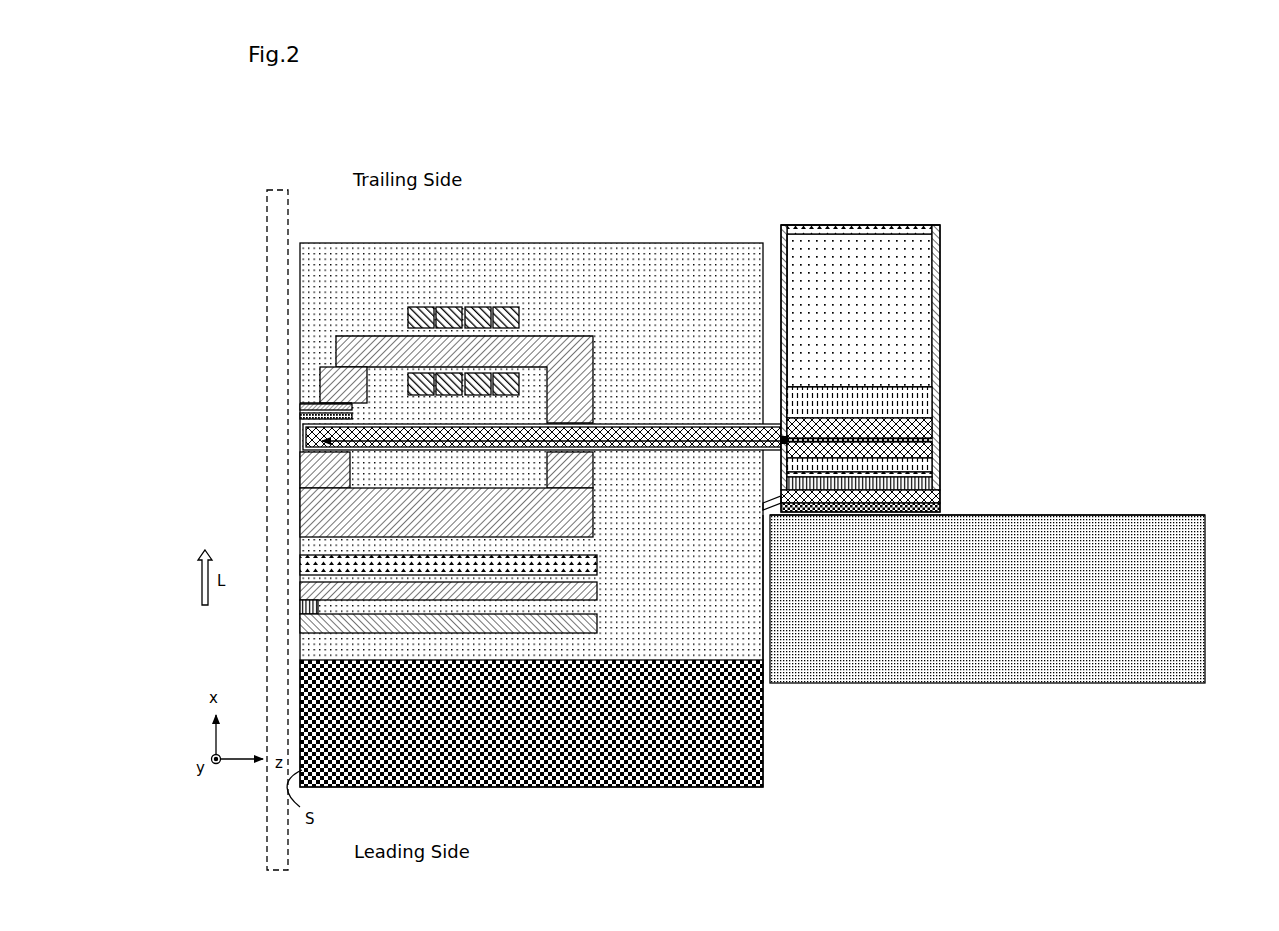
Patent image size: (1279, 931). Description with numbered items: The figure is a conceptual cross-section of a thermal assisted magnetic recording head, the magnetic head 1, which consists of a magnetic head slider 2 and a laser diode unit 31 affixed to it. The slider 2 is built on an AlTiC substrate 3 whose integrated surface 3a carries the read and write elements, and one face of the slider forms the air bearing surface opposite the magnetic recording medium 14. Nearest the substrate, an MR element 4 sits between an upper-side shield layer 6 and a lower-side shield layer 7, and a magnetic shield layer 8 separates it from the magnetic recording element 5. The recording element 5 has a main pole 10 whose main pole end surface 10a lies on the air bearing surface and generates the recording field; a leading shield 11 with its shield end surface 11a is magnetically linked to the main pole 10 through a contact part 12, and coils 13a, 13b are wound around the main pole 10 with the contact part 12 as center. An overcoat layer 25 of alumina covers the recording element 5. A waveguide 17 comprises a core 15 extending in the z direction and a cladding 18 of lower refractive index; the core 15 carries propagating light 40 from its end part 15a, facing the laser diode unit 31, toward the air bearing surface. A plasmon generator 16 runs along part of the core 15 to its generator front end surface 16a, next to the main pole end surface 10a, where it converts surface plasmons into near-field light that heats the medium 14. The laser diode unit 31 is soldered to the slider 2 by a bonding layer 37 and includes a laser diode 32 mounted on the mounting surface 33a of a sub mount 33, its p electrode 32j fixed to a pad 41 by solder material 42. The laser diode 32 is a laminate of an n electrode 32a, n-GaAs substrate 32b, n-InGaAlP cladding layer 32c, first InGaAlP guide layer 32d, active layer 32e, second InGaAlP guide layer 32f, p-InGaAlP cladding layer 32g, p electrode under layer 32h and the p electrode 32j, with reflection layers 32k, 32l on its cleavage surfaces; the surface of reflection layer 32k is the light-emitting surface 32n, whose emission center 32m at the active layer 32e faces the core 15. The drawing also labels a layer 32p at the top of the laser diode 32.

The magnetic head 1 is at (628, 122).
The magnetic head slider 2 is at (529, 240).
The substrate 3 is at (765, 716).
The integrated surface 3a is at (656, 660).
The MR element 4 is at (300, 604).
The magnetic recording element 5 is at (238, 440).
The upper-side shield layer 6 is at (300, 586).
The lower-side shield layer 7 is at (300, 621).
The magnetic shield layer 8 is at (300, 560).
The main pole 10 is at (303, 363).
The main pole end surface 10a is at (300, 404).
The leading shield 11 is at (288, 464).
The shield end surface 11a is at (302, 478).
The contact part 12 is at (597, 397).
The coil 13a is at (424, 307).
The coil 13b is at (418, 373).
The magnetic recording medium 14 is at (275, 243).
The core 15 is at (633, 424).
The end part 15a is at (781, 445).
The plasmon generator 16 is at (352, 416).
The generator front end surface 16a is at (300, 413).
The waveguide 17 is at (658, 405).
The cladding 18 is at (466, 413).
The overcoat layer 25 is at (693, 282).
The laser diode unit 31 is at (920, 205).
The laser diode 32 is at (892, 344).
The n electrode 32a is at (938, 228).
The n-GaAs substrate 32b is at (940, 298).
The n-InGaAlP cladding layer 32c is at (936, 388).
The first InGaAlP guide layer 32d is at (936, 405).
The active layer 32e is at (936, 428).
The second InGaAlP guide layer 32f is at (938, 450).
The p-InGaAlP cladding layer 32g is at (938, 464).
The p electrode under layer 32h is at (938, 482).
The p electrode 32j is at (940, 496).
The reflection layer 32k is at (781, 233).
The reflection layer 32l is at (940, 268).
The emission center 32m is at (781, 438).
The light-emitting surface 32n is at (781, 312).
The upper surface 32p is at (873, 226).
The sub mount 33 is at (1235, 578).
The mounting surface 33a is at (1118, 515).
The bonding layer 37 is at (770, 620).
The propagating light 40 is at (410, 447).
The pad 41 is at (781, 508).
The solder material 42 is at (781, 500).